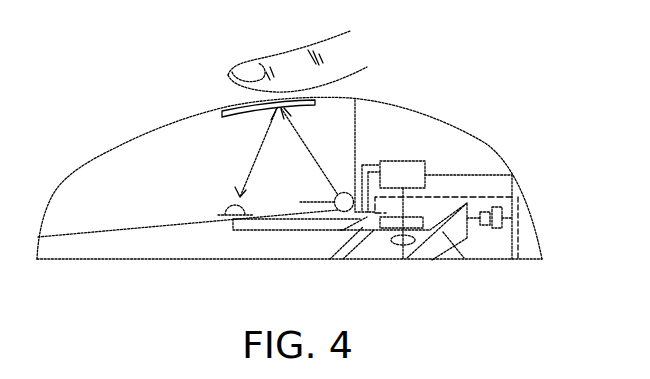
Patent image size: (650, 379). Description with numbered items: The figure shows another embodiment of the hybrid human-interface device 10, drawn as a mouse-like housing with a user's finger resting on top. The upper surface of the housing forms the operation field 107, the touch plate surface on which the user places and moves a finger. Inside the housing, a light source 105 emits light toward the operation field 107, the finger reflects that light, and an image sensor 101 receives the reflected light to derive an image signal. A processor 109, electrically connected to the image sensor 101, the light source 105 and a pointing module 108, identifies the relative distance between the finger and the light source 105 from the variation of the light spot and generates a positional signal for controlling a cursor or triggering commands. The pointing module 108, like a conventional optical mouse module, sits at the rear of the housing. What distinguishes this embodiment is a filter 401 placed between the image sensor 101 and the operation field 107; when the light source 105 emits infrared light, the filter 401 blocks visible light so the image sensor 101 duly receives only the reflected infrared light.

The hybrid human-interface device 10 is at (298, 141).
The image sensor 101 is at (217, 214).
The light source 105 is at (300, 203).
The operation field 107 is at (173, 118).
The pointing module 108 is at (516, 223).
The processor 109 is at (413, 161).
The filter 401 is at (229, 118).